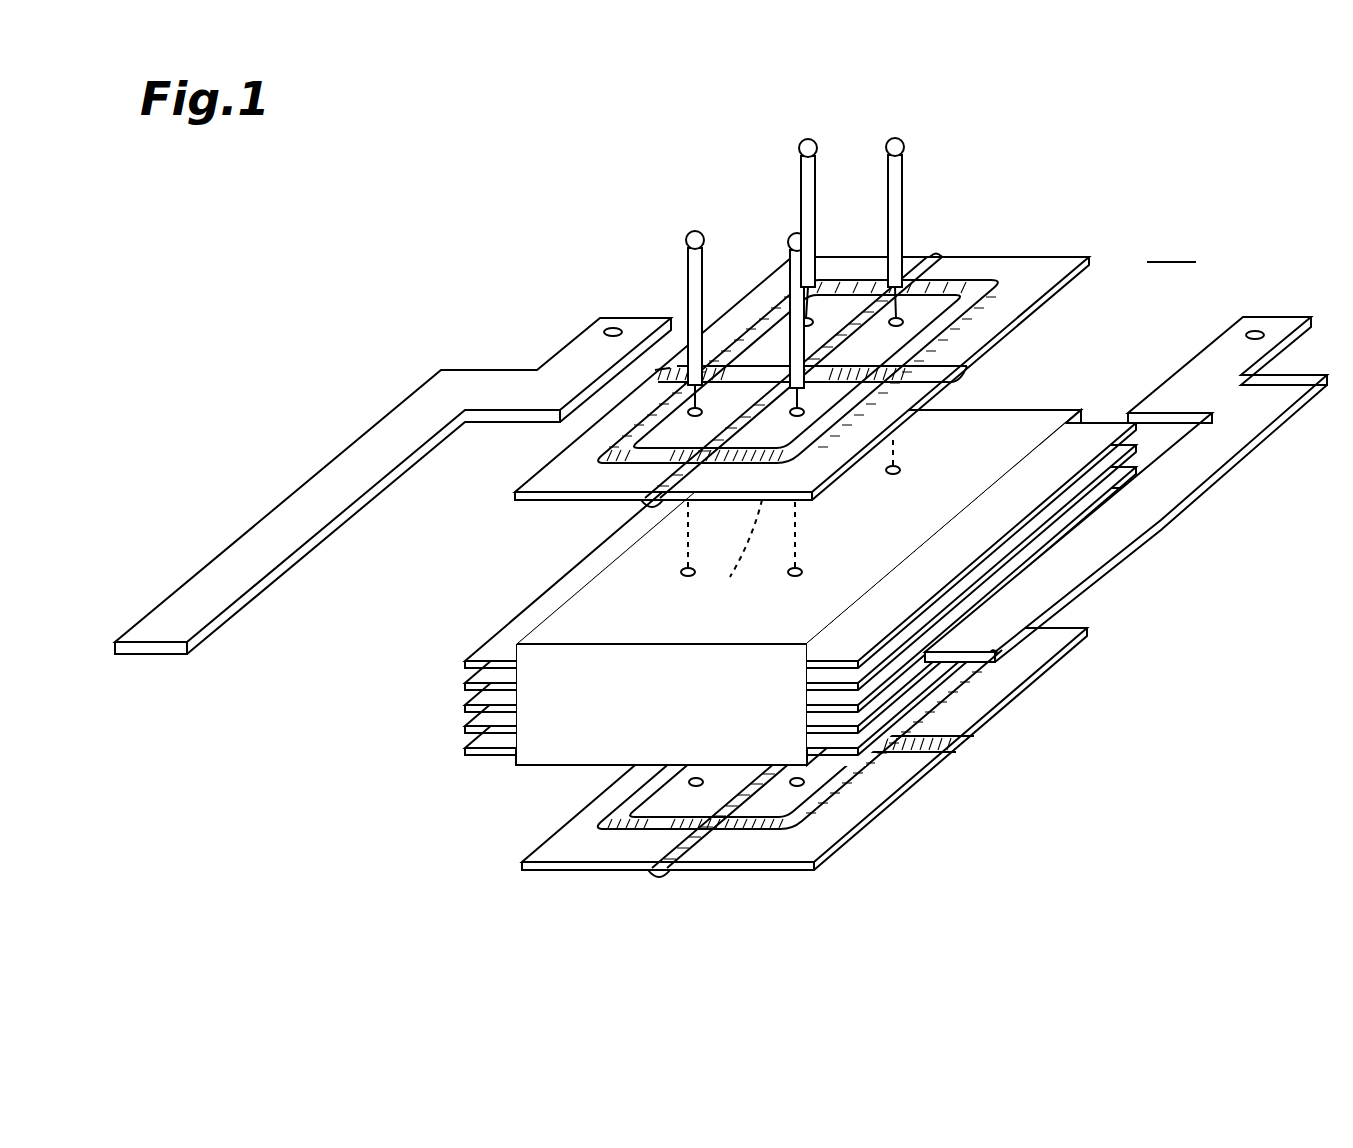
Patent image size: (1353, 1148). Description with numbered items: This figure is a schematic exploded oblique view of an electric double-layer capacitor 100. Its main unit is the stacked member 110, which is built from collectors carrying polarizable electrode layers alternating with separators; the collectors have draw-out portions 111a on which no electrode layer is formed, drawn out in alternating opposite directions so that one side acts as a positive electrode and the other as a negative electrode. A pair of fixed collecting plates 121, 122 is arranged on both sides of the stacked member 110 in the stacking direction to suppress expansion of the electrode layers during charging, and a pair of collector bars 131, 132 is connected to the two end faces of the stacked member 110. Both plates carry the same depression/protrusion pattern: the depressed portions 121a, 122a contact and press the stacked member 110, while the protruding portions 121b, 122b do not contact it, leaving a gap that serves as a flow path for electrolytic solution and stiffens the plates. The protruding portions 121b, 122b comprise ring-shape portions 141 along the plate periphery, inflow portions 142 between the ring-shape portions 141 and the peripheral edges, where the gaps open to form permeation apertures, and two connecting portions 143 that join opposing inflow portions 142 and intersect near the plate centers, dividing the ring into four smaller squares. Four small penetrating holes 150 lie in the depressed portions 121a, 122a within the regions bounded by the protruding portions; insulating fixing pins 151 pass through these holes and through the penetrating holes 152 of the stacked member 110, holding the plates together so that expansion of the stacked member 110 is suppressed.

The electric double-layer capacitor 100 is at (1171, 249).
The stacked member 110 is at (1092, 391).
The draw-out portions 111a is at (470, 662).
The fixed collecting plate 121 is at (1075, 255).
The depressed portion 121a is at (598, 480).
The protruding portion 121b is at (640, 360).
The fixed collecting plate 122 is at (1090, 632).
The depressed portion 122a is at (840, 822).
The protruding portion 122b is at (935, 760).
The collector bar 131 is at (1205, 343).
The collector bar 132 is at (618, 316).
The ring-shape portion 141 is at (960, 330).
The inflow portion 142 is at (950, 380).
The connecting portion 143 is at (850, 362).
The penetrating holes 150 is at (813, 322).
The fixing pins 151 is at (800, 150).
The penetrating holes 152 is at (898, 473).